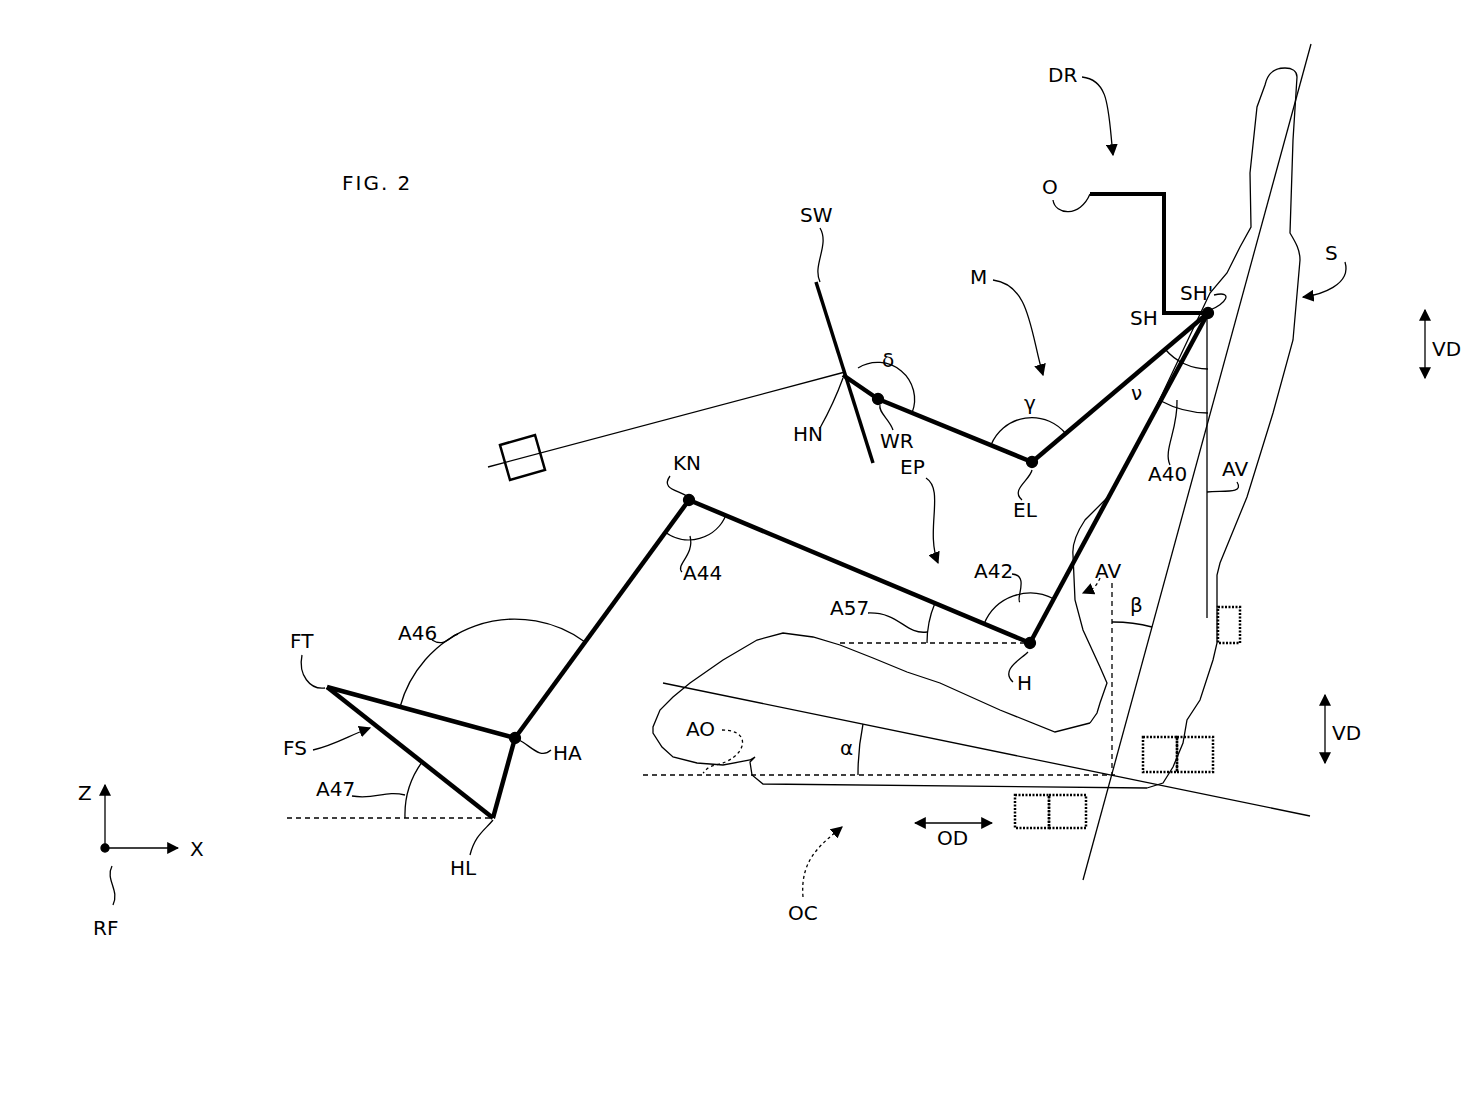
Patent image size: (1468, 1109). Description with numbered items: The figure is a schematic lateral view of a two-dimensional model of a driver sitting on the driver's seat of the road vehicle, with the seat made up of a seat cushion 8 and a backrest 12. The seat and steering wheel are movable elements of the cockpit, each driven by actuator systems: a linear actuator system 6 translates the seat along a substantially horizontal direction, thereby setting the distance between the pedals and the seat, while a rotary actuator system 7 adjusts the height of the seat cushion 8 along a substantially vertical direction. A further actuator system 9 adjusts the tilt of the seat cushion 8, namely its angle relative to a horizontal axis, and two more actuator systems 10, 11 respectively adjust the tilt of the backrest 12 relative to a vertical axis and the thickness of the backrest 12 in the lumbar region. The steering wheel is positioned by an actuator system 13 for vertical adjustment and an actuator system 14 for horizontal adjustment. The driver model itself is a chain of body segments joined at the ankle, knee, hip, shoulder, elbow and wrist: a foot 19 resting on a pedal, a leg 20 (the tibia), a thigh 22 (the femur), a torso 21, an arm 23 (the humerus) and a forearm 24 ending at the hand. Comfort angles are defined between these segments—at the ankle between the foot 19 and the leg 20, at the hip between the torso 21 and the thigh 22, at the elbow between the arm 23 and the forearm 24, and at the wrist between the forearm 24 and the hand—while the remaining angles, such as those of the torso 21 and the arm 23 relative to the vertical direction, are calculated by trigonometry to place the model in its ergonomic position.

The actuator system 6 is at (1033, 820).
The actuator system 7 is at (1066, 818).
The seat cushion 8 is at (767, 660).
The actuator system 9 is at (1158, 745).
The actuator system 10 is at (1200, 745).
The actuator system 11 is at (1232, 622).
The backrest 12 is at (1257, 410).
The actuator system 13 is at (527, 445).
The actuator system 14 is at (538, 478).
The foot 19 is at (500, 795).
The leg 20 is at (600, 612).
The torso 21 is at (1112, 492).
The thigh 22 is at (855, 550).
The arm 23 is at (1110, 385).
The forearm 24 is at (937, 423).